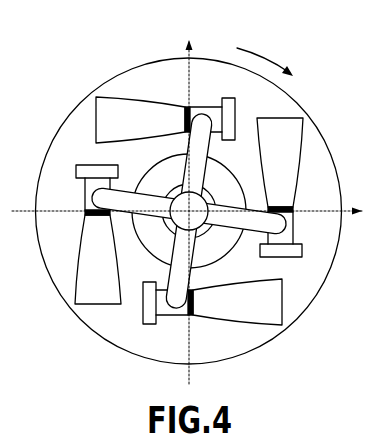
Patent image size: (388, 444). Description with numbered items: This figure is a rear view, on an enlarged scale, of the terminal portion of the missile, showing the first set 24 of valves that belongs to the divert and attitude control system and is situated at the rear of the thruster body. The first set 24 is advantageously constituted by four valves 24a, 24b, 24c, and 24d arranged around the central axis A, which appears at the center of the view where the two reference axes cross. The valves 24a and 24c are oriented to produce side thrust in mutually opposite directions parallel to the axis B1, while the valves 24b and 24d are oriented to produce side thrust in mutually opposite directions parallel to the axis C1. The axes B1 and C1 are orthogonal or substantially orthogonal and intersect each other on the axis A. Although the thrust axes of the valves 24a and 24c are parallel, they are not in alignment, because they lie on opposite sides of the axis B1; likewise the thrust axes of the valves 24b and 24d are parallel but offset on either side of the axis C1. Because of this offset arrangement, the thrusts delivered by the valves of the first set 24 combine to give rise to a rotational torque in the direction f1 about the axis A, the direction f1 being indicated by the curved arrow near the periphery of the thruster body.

The first set of valves 24 is at (80, 116).
The valve 24a is at (102, 289).
The valve 24b is at (117, 108).
The valve 24c is at (287, 130).
The valve 24d is at (266, 310).
The axis A is at (193, 212).
The axis B1 is at (189, 197).
The axis C1 is at (189, 198).
The direction of rotational torque f1 is at (265, 54).